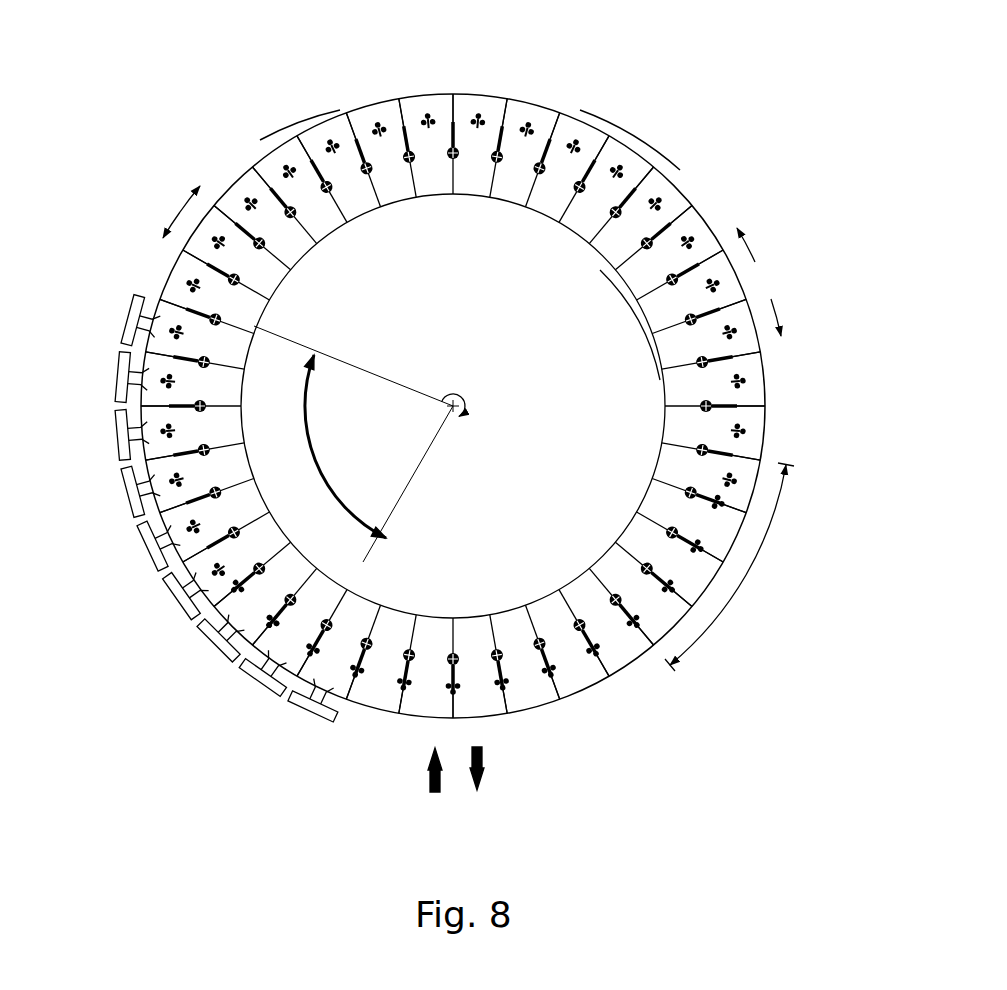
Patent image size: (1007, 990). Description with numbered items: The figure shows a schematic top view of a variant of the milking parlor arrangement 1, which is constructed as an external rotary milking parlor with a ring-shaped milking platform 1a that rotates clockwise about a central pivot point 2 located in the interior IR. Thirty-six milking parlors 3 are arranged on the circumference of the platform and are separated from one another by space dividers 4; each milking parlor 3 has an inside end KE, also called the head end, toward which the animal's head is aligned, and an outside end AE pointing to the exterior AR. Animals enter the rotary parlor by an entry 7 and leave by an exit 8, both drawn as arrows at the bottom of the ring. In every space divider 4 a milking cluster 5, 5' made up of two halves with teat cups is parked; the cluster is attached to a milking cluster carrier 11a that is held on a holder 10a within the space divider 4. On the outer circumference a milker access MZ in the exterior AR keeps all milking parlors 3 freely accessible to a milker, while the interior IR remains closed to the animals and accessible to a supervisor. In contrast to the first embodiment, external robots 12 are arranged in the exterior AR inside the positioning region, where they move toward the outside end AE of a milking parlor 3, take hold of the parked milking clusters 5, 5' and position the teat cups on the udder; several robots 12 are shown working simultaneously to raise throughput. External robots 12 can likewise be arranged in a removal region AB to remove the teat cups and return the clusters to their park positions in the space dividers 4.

The milking parlor arrangement 1 is at (487, 57).
The milking platform 1a is at (627, 140).
The pivot point 2 is at (460, 400).
The milking parlor 3 is at (460, 103).
The space divider 4 is at (407, 133).
The milking cluster 5 is at (453, 414).
The milking cluster 5' is at (294, 572).
The entry 7 is at (430, 777).
The exit 8 is at (483, 763).
The holder 10a is at (499, 163).
The milking cluster carrier 11a is at (502, 132).
The external robot 12 is at (129, 312).
The outside end AE is at (312, 127).
The exterior AR is at (722, 137).
The interior IR is at (570, 429).
The core edge KE is at (641, 320).
The milker access MZ is at (456, 261).
The removal region AB is at (729, 567).